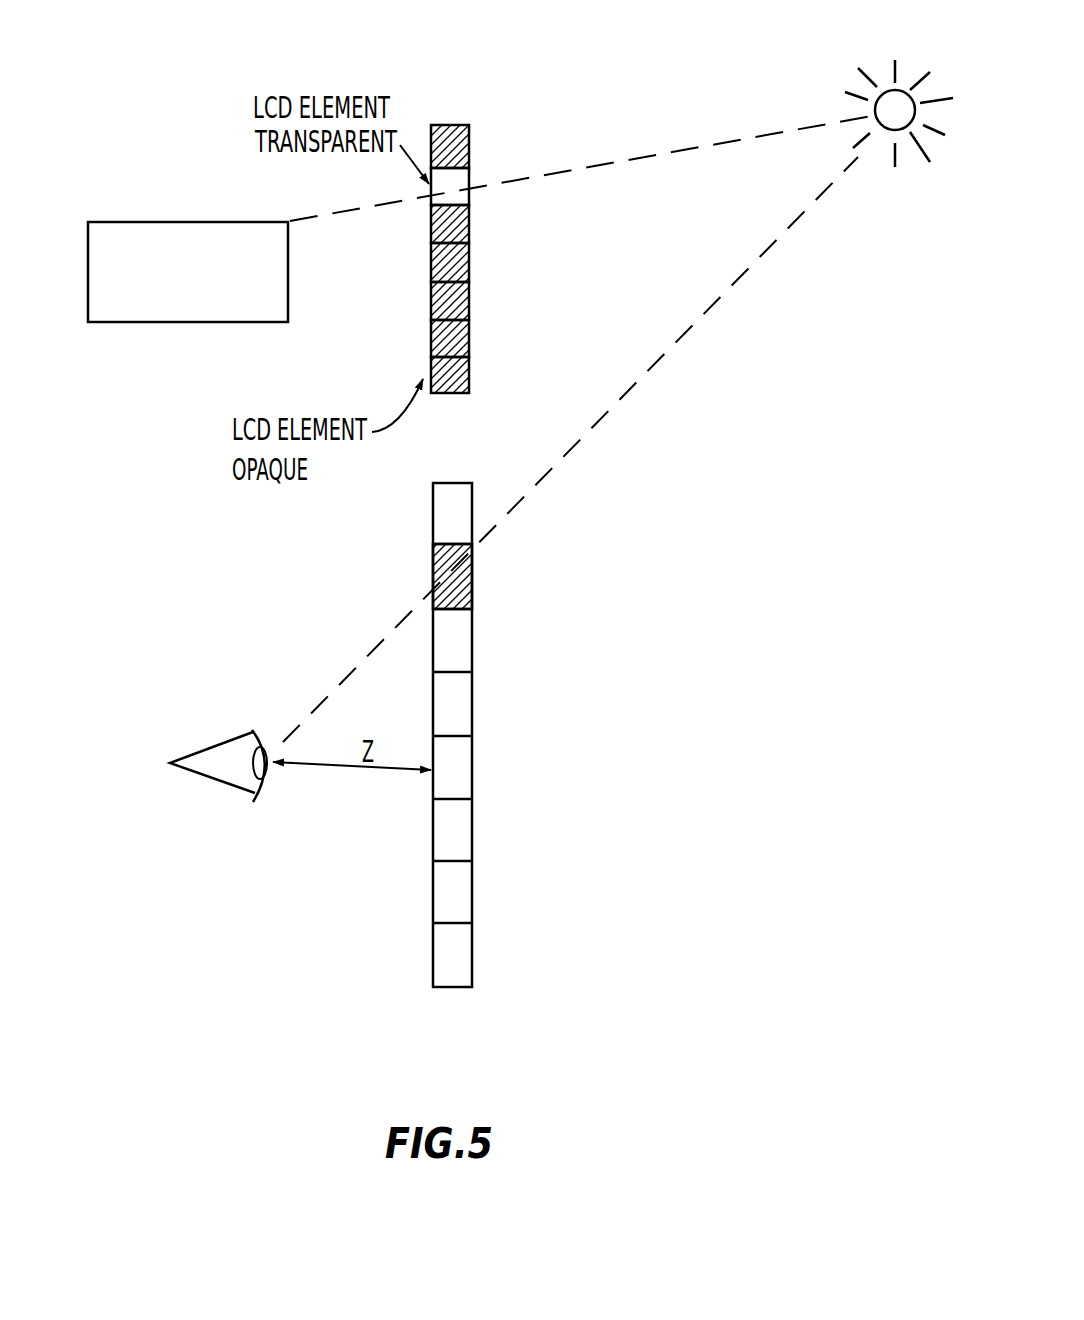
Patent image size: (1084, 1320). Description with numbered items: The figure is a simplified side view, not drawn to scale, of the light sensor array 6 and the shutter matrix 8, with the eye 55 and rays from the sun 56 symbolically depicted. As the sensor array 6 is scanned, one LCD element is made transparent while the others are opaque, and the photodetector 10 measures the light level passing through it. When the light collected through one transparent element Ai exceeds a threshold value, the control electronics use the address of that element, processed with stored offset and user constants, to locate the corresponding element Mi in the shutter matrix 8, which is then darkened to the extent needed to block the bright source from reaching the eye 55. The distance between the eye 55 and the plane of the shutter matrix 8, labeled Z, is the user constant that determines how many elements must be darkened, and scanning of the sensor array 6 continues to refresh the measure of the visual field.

The light sensor array 6 is at (487, 124).
The shutter matrix 8 is at (430, 951).
The photodetector 10 is at (124, 327).
The eye 55 is at (229, 785).
The sun 56 is at (886, 91).
The transparent element Ai is at (477, 191).
The shutter matrix element Mi is at (476, 570).